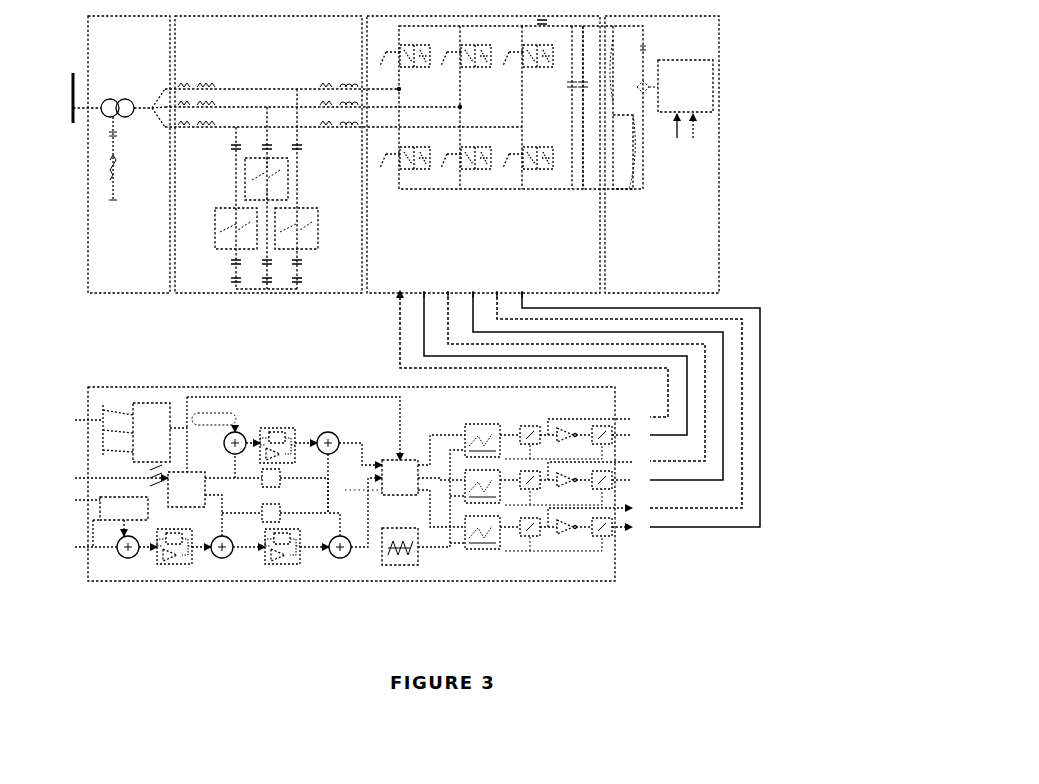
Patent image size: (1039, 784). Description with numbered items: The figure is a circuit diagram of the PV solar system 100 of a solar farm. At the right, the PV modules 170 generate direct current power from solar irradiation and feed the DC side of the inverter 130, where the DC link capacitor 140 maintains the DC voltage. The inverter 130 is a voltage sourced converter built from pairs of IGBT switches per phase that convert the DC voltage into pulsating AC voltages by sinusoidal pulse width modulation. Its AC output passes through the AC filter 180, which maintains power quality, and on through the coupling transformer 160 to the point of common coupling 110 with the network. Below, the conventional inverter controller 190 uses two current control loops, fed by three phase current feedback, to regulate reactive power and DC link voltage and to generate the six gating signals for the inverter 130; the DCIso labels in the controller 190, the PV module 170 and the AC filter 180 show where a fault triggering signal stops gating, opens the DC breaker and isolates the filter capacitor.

The PV solar system 100 is at (100, 326).
The point of common coupling (PCC) 110 is at (72, 124).
The inverter 130 is at (551, 187).
The DC link capacitor 140 is at (583, 142).
The coupling transformer 160 is at (87, 212).
The PV modules 170 is at (723, 221).
The AC filter 180 is at (203, 299).
The conventional inverter controller 190 is at (318, 384).